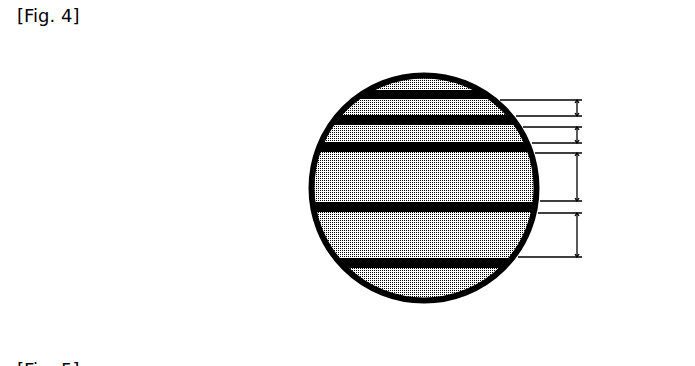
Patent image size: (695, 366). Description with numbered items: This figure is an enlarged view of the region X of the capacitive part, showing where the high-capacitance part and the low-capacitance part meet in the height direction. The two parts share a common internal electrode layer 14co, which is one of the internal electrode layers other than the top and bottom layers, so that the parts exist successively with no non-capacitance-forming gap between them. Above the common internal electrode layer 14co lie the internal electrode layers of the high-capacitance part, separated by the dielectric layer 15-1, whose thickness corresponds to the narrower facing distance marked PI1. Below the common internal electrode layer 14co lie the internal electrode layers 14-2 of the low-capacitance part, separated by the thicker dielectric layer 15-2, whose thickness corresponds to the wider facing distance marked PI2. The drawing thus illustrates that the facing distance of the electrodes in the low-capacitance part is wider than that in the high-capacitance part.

The internal electrode layer 14-2 is at (345, 212).
The common internal electrode layer 14co is at (345, 172).
The dielectric layer 15-1 is at (433, 110).
The dielectric layer 15-2 is at (436, 238).
The enlarged region X is at (322, 127).
The first pitch PI1 is at (552, 121).
The second pitch PI2 is at (561, 205).